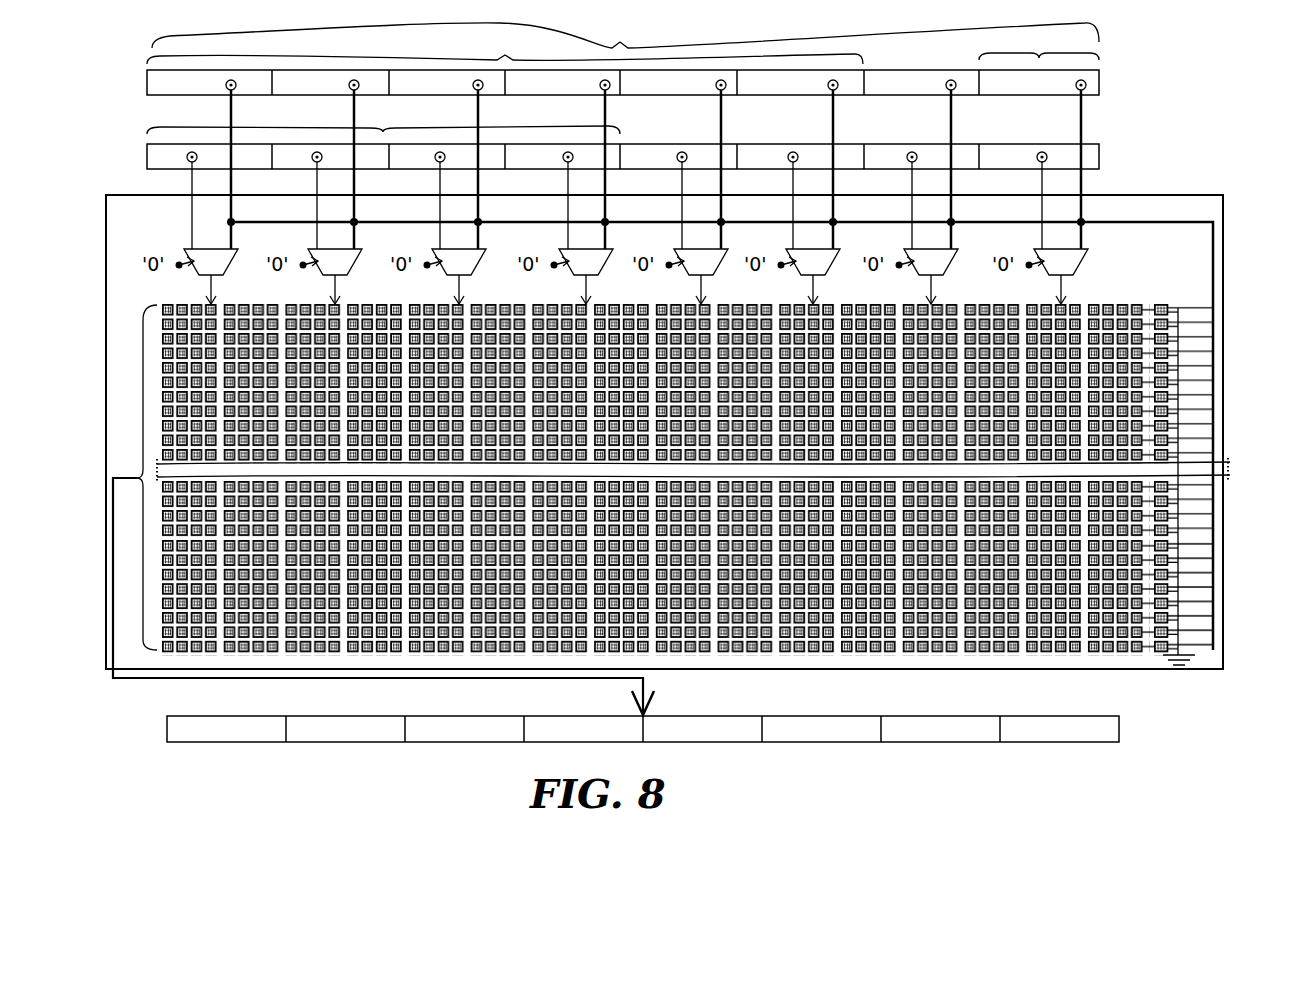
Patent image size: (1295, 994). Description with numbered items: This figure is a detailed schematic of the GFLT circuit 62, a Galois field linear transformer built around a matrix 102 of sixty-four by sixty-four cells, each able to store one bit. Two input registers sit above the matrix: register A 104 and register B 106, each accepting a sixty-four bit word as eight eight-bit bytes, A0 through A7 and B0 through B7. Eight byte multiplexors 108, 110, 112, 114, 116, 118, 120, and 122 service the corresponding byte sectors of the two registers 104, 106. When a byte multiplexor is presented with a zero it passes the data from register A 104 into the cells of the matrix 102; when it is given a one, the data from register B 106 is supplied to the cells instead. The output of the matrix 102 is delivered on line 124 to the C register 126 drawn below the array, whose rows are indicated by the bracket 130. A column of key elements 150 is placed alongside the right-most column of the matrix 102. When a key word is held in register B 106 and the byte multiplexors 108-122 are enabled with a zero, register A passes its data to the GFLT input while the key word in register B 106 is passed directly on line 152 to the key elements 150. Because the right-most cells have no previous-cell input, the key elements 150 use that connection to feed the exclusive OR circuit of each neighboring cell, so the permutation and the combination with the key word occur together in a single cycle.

The GFLT circuit 62 is at (1245, 97).
The matrix 102 is at (1120, 292).
The register A 104 is at (160, 165).
The register B 106 is at (148, 92).
The byte multiplexor 108 is at (1068, 259).
The byte multiplexor 110 is at (939, 264).
The byte multiplexor 112 is at (821, 264).
The byte multiplexor 114 is at (709, 264).
The byte multiplexor 116 is at (594, 264).
The byte multiplexor 118 is at (467, 264).
The byte multiplexor 120 is at (343, 264).
The byte multiplexor 122 is at (219, 264).
The line 124 is at (400, 678).
The C register 126 is at (742, 716).
The array rows 130 is at (163, 296).
The key elements 150 is at (1170, 298).
The line 152 is at (1100, 208).